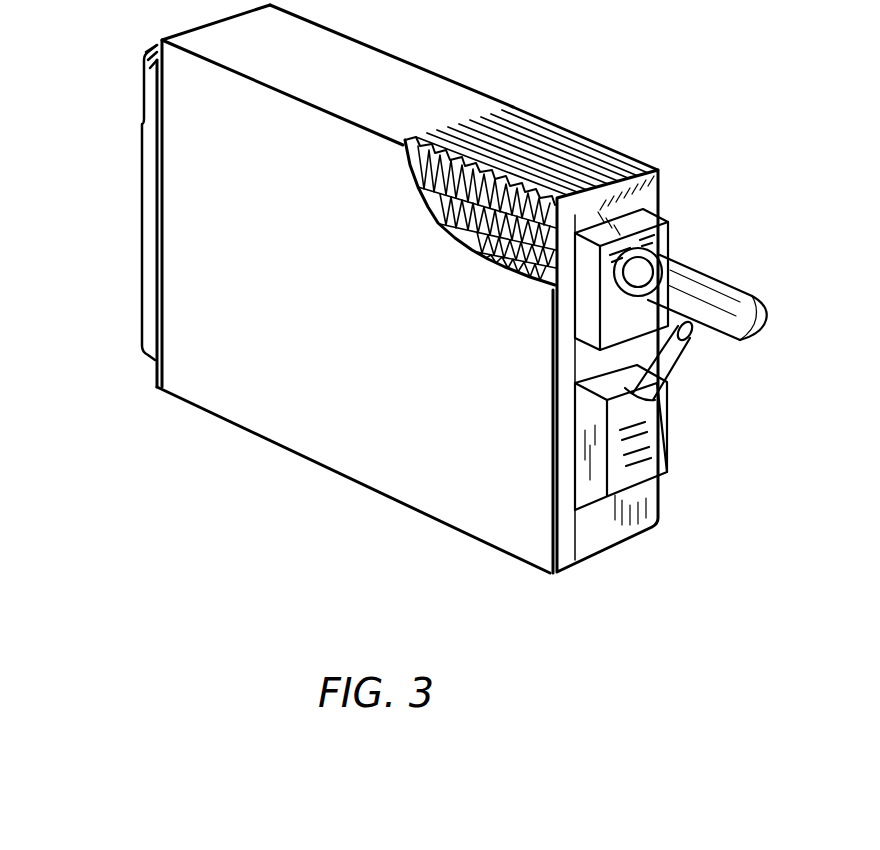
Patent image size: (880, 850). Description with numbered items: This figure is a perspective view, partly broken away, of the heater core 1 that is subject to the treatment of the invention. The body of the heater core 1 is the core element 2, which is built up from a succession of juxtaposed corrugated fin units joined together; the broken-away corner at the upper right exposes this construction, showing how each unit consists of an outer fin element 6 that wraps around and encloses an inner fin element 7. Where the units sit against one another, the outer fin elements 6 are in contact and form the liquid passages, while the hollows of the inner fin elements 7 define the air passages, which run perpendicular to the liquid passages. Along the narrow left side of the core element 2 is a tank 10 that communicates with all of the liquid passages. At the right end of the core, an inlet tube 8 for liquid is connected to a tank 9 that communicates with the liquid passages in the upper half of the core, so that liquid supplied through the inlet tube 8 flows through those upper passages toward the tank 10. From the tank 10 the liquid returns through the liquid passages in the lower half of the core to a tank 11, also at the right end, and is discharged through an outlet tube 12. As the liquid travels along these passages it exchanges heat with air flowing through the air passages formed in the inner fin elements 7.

The heater core 1 is at (118, 163).
The core element 2 is at (367, 314).
The outer fin element 6 is at (413, 168).
The inner fin element 7 is at (546, 128).
The inlet tube 8 is at (722, 292).
The tank 9 is at (668, 226).
The tank 10 is at (148, 95).
The tank 11 is at (655, 432).
The outlet tube 12 is at (683, 346).